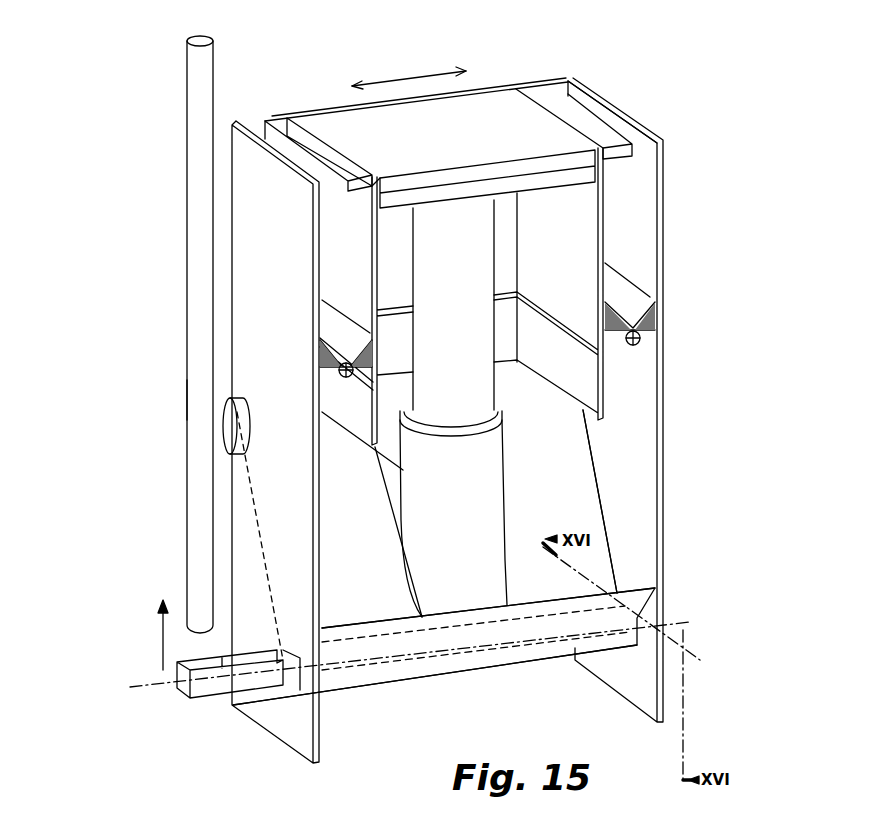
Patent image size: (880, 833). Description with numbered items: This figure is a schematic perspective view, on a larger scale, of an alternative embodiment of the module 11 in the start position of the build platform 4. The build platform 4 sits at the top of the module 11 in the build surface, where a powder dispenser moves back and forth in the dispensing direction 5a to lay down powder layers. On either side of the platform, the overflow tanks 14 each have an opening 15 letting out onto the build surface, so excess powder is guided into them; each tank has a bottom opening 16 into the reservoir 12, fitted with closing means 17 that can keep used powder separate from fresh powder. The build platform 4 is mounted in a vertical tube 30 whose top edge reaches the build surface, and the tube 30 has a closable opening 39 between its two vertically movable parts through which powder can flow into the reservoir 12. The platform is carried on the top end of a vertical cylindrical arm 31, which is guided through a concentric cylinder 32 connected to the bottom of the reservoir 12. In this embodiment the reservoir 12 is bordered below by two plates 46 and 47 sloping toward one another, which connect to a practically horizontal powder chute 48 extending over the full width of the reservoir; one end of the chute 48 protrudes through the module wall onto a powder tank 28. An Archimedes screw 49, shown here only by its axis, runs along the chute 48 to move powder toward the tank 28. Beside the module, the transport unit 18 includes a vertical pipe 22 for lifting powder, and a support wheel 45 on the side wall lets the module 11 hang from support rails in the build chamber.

The build platform 4 is at (487, 120).
The dispensing direction 5a is at (386, 82).
The module 11 is at (643, 108).
The reservoir 12 is at (552, 466).
The overflow tank 14 is at (337, 290).
The opening 15 is at (280, 148).
The opening 16 is at (632, 303).
The closing means 17 is at (641, 340).
The transport unit 18 is at (185, 400).
The vertical pipe 22 is at (196, 192).
The powder tank 28 is at (200, 672).
The vertical tube 30 is at (372, 266).
The vertical cylindrical arm 31 is at (458, 248).
The cylinder 32 is at (470, 482).
The closable opening 39 is at (605, 357).
The support wheel 45 is at (226, 431).
The plate 46 is at (575, 483).
The plate 47 is at (636, 598).
The powder chute 48 is at (415, 665).
The Archimedes screw 49 is at (140, 690).